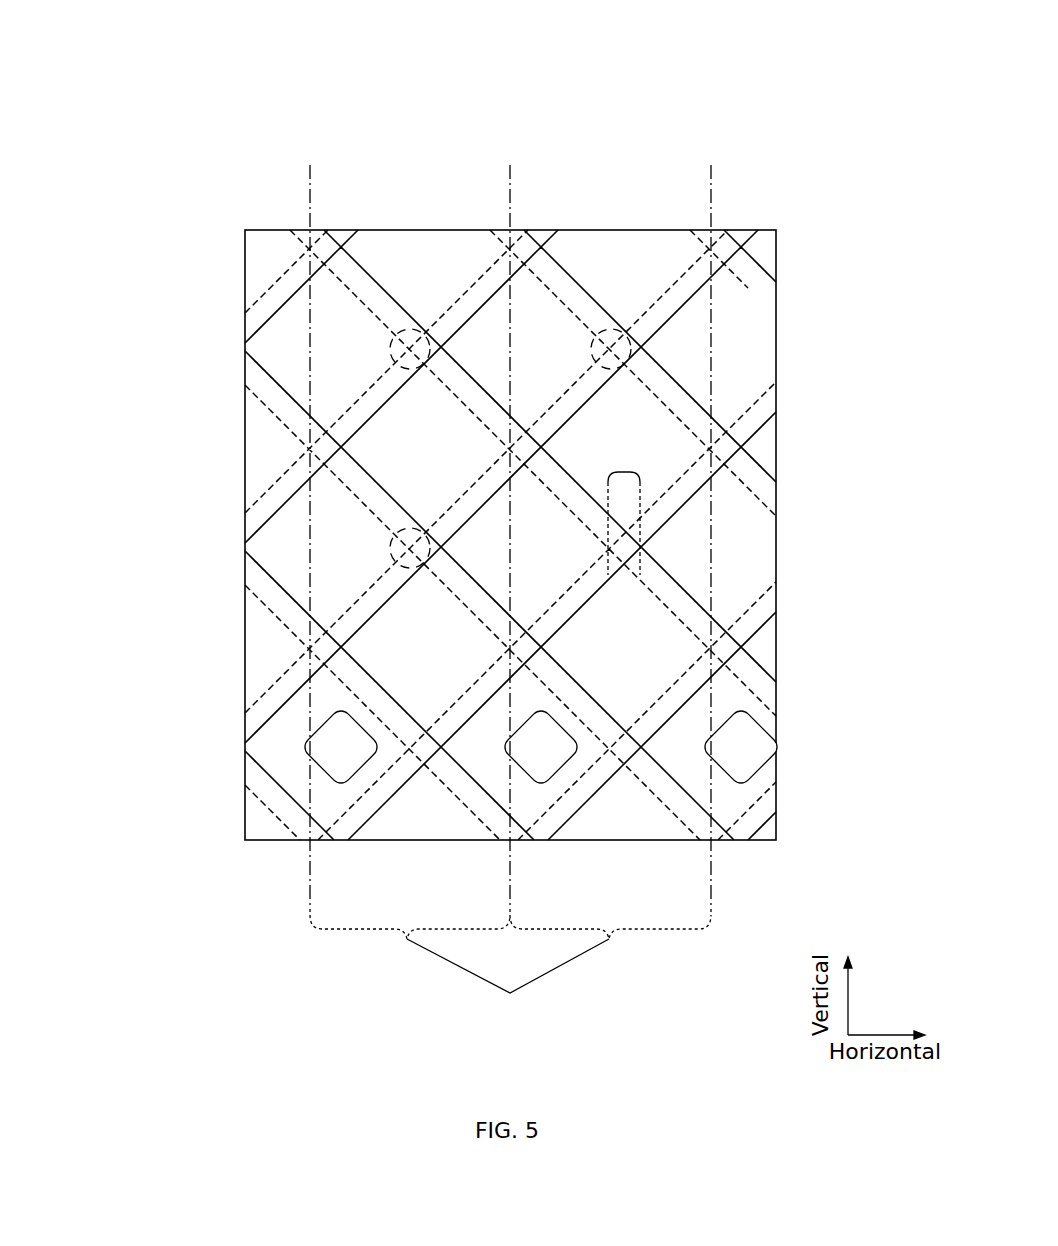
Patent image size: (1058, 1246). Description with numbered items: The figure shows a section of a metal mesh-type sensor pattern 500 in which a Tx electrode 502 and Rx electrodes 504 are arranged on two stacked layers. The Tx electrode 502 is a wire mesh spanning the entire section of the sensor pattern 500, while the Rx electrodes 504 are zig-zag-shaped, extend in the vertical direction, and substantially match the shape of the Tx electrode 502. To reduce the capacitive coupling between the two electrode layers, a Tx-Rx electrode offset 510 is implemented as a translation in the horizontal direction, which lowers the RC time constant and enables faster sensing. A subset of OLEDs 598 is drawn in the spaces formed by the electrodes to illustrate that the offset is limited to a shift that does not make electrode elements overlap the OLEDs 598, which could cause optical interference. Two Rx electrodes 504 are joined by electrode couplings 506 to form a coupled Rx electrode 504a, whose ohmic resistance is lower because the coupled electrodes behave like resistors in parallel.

The sensor pattern 500 is at (729, 103).
The Tx electrode 502 is at (363, 268).
The Rx electrodes 504 is at (268, 684).
The coupled Rx electrode 504a is at (510, 617).
The electrode couplings 506 is at (392, 550).
The Tx-Rx electrode offset 510 is at (624, 472).
The OLEDs 598 is at (519, 769).